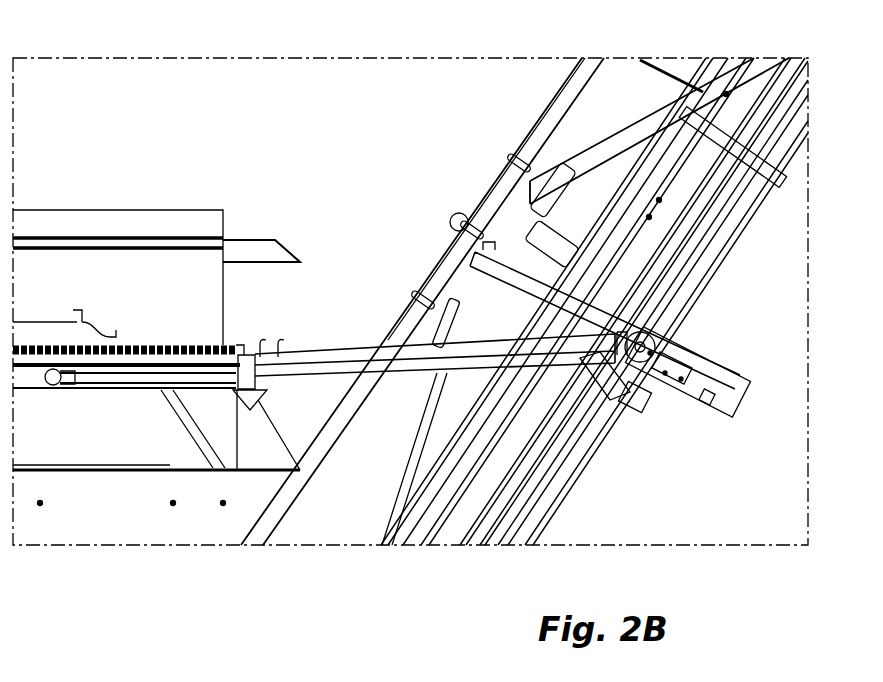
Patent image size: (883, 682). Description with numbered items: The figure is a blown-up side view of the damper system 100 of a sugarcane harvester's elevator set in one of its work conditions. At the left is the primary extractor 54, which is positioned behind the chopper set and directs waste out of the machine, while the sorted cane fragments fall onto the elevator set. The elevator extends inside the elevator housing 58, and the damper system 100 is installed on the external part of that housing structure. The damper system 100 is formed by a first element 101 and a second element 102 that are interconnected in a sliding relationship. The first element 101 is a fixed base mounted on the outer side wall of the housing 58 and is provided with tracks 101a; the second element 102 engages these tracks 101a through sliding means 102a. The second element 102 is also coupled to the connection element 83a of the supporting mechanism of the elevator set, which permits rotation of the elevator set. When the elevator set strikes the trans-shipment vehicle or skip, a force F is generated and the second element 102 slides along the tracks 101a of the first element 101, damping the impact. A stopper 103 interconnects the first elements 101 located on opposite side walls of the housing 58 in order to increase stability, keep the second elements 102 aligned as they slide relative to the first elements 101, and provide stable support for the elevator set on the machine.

The primary extractor 54 is at (111, 206).
The elevator housing 58 is at (608, 98).
The connection element 83a is at (338, 355).
The damper system 100 is at (652, 430).
The first element 101 is at (670, 258).
The track 101a is at (513, 187).
The second element 102 is at (723, 383).
The sliding means 102a is at (713, 353).
The stopper 103 is at (727, 413).
The force F is at (595, 490).